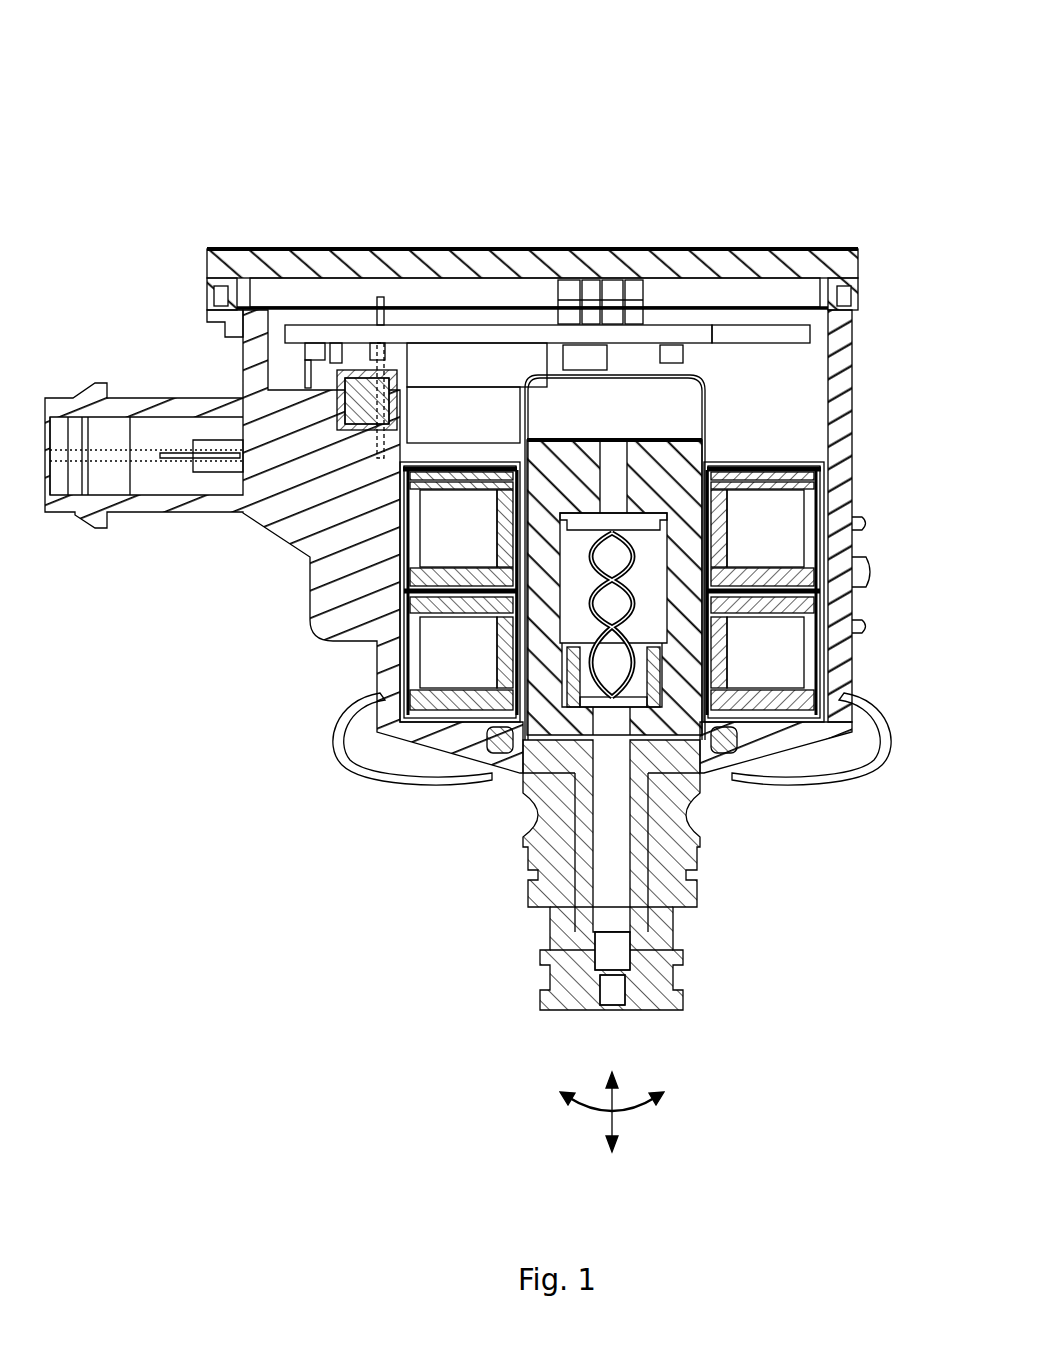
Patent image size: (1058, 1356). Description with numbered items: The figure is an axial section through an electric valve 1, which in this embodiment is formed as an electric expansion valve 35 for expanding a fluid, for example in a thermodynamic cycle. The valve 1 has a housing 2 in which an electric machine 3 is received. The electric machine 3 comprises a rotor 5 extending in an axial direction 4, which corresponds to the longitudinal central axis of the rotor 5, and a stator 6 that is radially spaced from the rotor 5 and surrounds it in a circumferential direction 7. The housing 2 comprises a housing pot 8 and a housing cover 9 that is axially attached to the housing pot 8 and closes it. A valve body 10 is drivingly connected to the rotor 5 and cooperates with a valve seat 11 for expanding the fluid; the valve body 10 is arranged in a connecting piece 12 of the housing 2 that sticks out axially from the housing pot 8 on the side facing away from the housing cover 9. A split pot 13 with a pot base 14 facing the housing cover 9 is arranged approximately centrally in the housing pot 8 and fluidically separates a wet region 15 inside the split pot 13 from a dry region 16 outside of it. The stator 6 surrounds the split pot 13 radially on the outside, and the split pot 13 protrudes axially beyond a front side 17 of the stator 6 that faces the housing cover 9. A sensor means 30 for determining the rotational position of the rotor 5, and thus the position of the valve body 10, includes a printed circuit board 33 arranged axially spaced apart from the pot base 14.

The electric valve 1 is at (825, 197).
The electric expansion valve 35 is at (494, 666).
The housing 2 is at (308, 600).
The electric machine 3 is at (770, 430).
The axial direction 4 is at (613, 1128).
The rotor 5 is at (722, 523).
The stator 6 is at (832, 485).
The circumferential direction 7 is at (582, 1111).
The housing pot 8 is at (838, 658).
The housing cover 9 is at (705, 265).
The valve body 10 is at (655, 878).
The valve seat 11 is at (690, 963).
The connecting piece 12 is at (540, 888).
The split pot 13 is at (712, 390).
The pot base 14 is at (652, 345).
The wet region 15 is at (626, 417).
The dry region 16 is at (756, 422).
The front side of the stator 17 is at (755, 462).
The sensor means 30 is at (473, 320).
The printed circuit board 33 is at (425, 335).